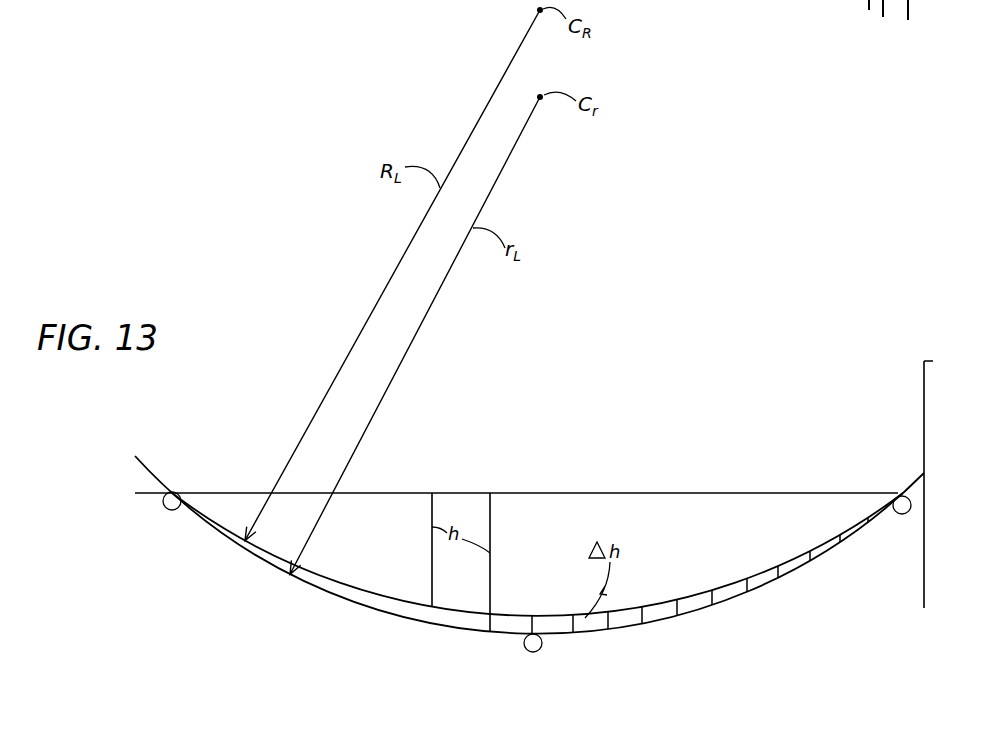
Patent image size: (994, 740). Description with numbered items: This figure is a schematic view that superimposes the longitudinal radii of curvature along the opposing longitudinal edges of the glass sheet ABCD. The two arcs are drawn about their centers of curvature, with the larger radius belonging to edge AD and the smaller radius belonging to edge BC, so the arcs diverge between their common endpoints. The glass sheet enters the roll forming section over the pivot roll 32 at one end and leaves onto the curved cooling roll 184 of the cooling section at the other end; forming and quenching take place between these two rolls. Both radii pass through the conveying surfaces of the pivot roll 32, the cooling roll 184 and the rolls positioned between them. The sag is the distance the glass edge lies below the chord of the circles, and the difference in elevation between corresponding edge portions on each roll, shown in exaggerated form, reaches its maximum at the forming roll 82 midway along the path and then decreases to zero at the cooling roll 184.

The cooling roll 184 is at (169, 510).
The pivot roll 32 is at (897, 513).
The forming roll 82 is at (542, 644).